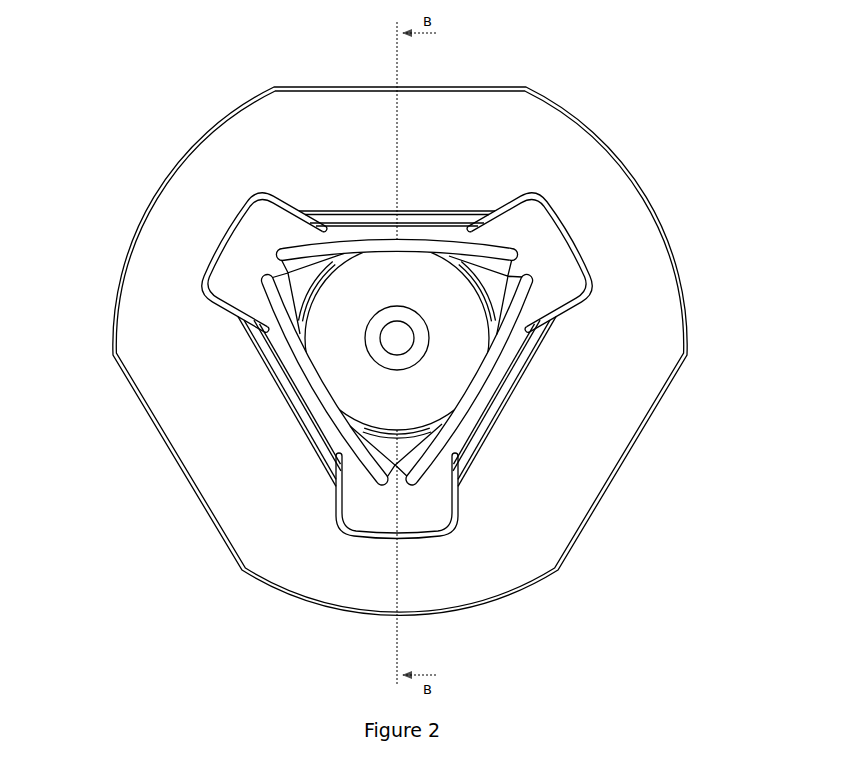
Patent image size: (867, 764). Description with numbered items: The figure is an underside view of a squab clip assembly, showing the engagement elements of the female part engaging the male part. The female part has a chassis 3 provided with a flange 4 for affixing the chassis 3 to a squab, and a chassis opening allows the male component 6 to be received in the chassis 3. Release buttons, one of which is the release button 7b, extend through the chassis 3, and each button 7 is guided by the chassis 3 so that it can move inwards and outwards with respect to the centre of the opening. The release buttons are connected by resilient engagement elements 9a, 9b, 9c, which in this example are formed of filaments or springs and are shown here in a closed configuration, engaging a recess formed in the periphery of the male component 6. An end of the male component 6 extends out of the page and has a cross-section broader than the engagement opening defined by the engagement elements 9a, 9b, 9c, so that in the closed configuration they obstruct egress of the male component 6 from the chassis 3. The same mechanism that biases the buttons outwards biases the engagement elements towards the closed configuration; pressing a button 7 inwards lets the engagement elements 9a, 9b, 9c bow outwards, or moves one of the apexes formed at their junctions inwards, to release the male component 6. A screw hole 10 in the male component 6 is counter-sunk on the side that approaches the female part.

The chassis 3 is at (499, 405).
The flange 4 is at (572, 181).
The male component 6 is at (458, 345).
The release button 7 is at (546, 244).
The release button 7b is at (428, 506).
The engagement element 9a is at (505, 324).
The engagement element 9b is at (346, 249).
The engagement element 9c is at (348, 412).
The screw hole 10 is at (397, 338).